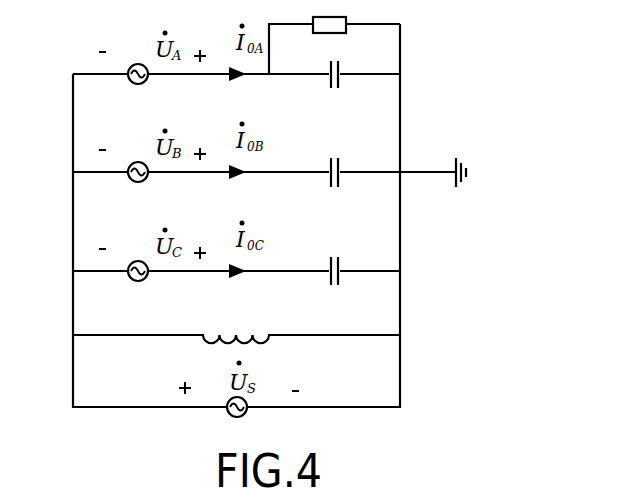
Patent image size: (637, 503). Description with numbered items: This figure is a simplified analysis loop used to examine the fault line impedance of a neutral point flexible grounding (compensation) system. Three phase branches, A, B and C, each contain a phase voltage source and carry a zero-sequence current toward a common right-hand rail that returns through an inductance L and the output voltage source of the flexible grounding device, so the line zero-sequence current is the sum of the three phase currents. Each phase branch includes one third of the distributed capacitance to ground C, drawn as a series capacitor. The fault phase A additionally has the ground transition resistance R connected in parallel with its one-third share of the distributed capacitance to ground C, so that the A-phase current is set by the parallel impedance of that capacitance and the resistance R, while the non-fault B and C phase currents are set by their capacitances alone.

The ground transition resistance R is at (334, 39).
The distributed capacitance to ground C is at (364, 102).
The inductor L is at (236, 321).